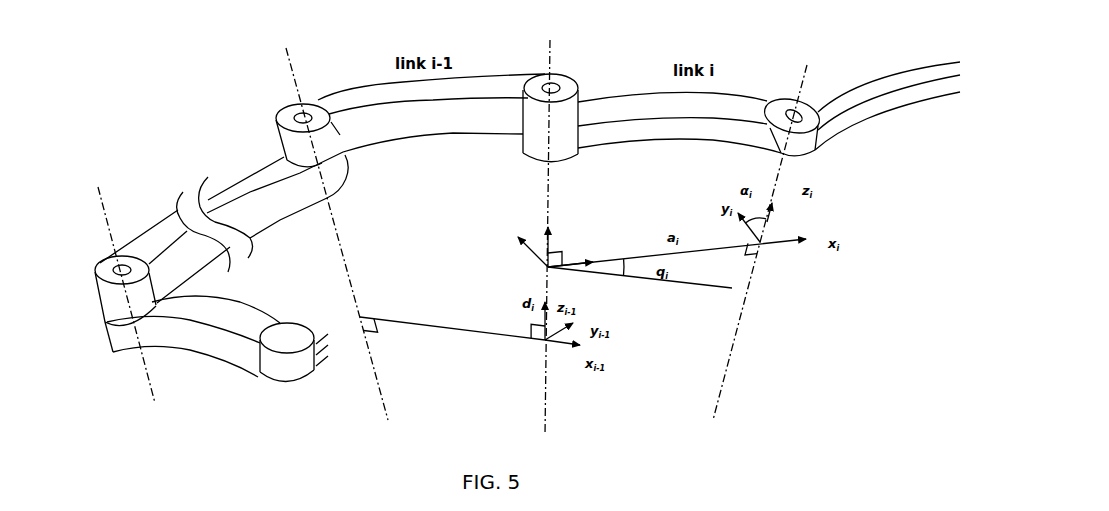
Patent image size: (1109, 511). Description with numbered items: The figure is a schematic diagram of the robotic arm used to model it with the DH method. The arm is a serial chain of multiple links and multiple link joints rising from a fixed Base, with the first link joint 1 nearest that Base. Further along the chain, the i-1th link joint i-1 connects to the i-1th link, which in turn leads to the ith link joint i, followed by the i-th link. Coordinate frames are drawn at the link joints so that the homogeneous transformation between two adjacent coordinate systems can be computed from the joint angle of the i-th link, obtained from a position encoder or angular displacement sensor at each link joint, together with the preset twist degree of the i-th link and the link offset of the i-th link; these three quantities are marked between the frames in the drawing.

The first link joint 1 is at (98, 295).
The i−1th link joint i-1 is at (300, 234).
The ith link joint i is at (563, 237).
The base Base is at (216, 342).